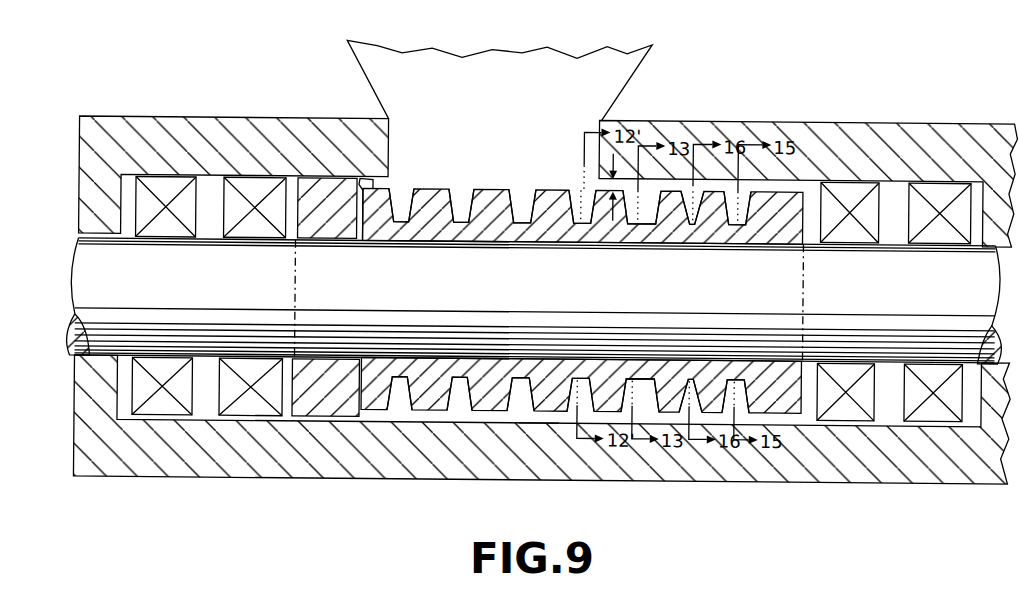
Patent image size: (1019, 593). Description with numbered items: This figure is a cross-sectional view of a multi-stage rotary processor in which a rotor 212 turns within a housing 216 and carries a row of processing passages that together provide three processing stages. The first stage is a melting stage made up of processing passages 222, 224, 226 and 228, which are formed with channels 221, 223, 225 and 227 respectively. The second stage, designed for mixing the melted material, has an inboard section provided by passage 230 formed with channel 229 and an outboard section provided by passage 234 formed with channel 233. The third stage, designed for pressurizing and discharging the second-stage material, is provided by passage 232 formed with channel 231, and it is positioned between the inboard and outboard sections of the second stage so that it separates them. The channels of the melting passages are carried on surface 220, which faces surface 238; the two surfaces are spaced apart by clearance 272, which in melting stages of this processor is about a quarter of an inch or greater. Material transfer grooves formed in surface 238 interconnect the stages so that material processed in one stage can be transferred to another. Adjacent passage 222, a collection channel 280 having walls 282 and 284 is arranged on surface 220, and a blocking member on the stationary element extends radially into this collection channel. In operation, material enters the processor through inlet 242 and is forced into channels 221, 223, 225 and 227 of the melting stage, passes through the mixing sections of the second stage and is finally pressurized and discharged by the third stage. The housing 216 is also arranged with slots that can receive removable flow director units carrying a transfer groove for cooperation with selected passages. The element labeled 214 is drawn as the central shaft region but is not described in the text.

The rotor 212 is at (323, 184).
The housing 216 is at (488, 462).
The shaft / rotor 214 is at (888, 304).
The inlet 242 is at (503, 68).
The clearance 272 is at (610, 183).
The wall 282 is at (375, 190).
The wall 284 is at (358, 223).
The collection channel 280 is at (363, 213).
The surface 220 is at (563, 405).
The surface 238 is at (548, 420).
The processing passage 222 is at (402, 213).
The processing passage 224 is at (460, 213).
The processing passage 226 is at (518, 213).
The processing passage 228 is at (580, 213).
The passage 230 is at (643, 213).
The passage 232 is at (691, 225).
The passage 234 is at (747, 208).
The channel 221 is at (408, 377).
The channel 223 is at (465, 377).
The channel 225 is at (520, 377).
The channel 227 is at (580, 377).
The channel 229 is at (637, 377).
The channel 231 is at (691, 378).
The channel 233 is at (737, 378).